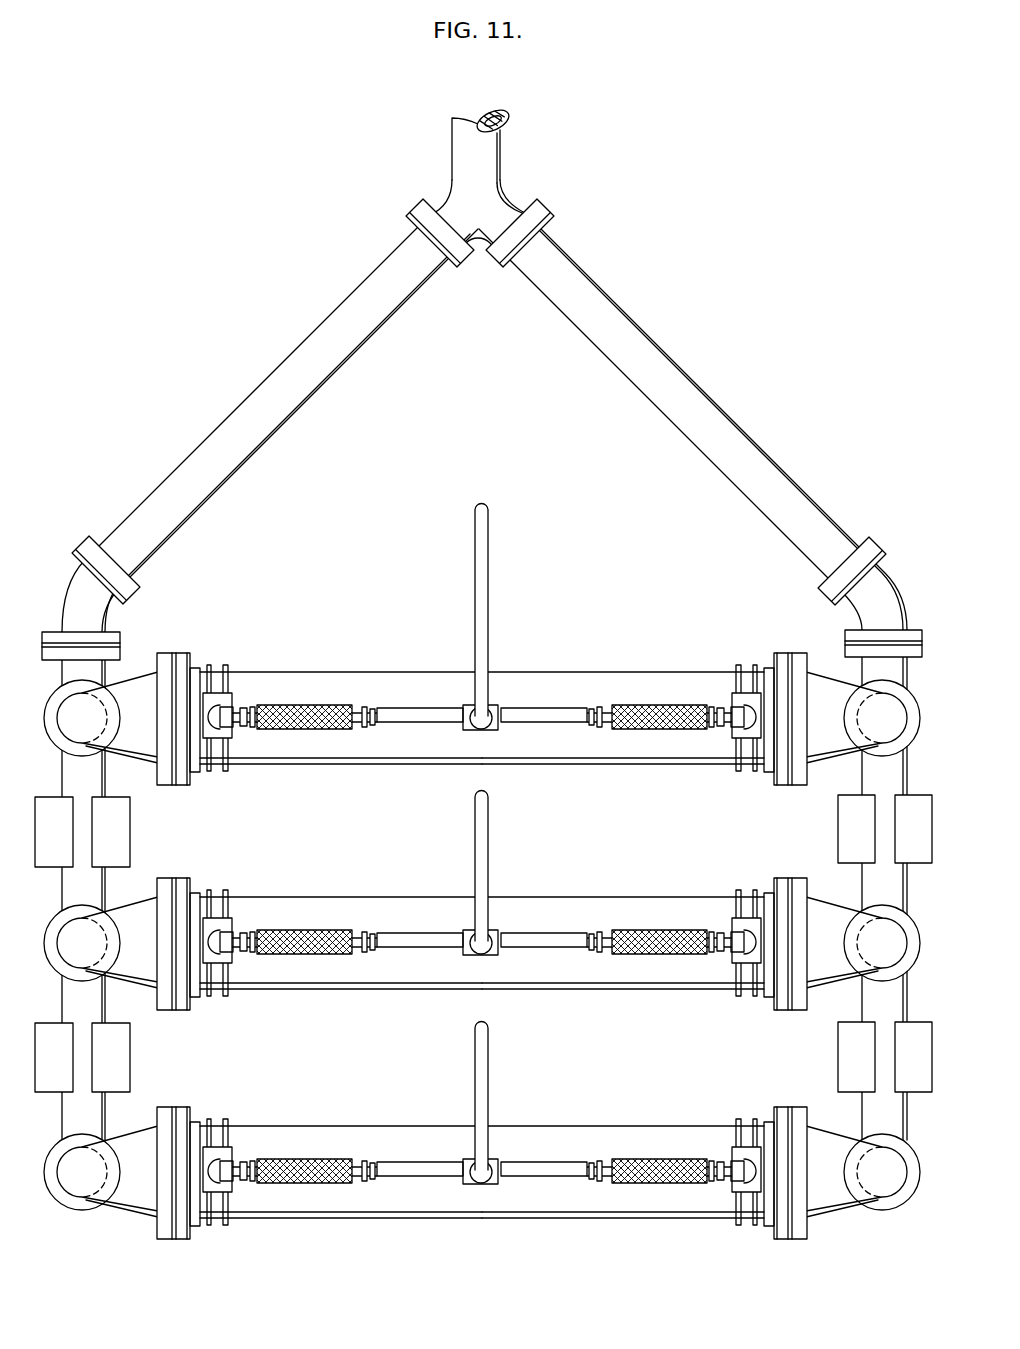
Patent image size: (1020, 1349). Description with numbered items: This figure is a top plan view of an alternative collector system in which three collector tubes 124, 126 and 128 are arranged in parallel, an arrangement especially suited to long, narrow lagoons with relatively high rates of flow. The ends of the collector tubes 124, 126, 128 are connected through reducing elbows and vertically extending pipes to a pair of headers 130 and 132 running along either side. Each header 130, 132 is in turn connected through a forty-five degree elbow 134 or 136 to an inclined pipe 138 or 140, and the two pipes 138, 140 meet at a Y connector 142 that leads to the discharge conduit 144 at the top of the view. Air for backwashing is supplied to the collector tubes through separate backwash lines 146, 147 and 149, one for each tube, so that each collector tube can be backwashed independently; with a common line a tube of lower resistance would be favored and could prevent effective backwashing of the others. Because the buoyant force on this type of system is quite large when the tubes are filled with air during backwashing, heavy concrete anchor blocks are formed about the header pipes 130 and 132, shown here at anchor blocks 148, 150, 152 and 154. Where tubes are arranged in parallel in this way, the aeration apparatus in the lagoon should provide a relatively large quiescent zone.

The collector tube 124 is at (563, 677).
The collector tube 126 is at (553, 908).
The collector tube 128 is at (555, 1138).
The header 130 is at (92, 888).
The header 132 is at (870, 883).
The forty five degree elbow 134 is at (75, 585).
The forty five degree elbow 136 is at (885, 597).
The pipe 138 is at (277, 417).
The pipe 140 is at (690, 388).
The Y connector 142 is at (483, 195).
The discharge conduit 144 is at (462, 127).
The backwash line 146 is at (482, 597).
The backwash line 147 is at (480, 830).
The anchor block 148 is at (122, 1058).
The backwash line 149 is at (480, 1075).
The anchor block 150 is at (122, 820).
The anchor block 152 is at (848, 812).
The anchor block 154 is at (850, 1055).